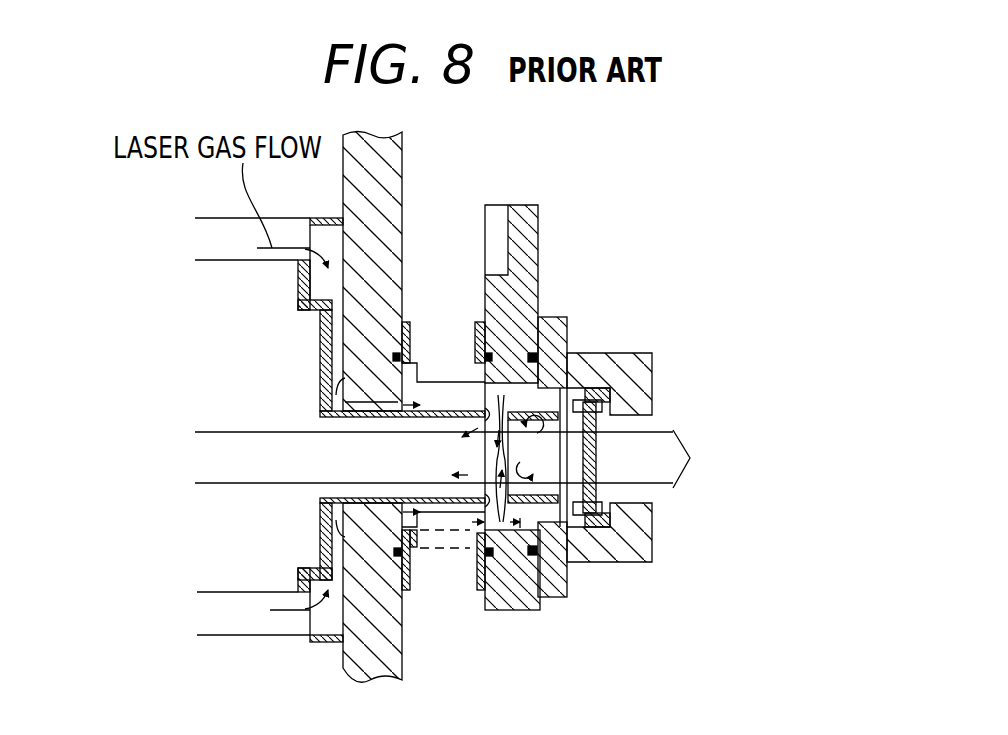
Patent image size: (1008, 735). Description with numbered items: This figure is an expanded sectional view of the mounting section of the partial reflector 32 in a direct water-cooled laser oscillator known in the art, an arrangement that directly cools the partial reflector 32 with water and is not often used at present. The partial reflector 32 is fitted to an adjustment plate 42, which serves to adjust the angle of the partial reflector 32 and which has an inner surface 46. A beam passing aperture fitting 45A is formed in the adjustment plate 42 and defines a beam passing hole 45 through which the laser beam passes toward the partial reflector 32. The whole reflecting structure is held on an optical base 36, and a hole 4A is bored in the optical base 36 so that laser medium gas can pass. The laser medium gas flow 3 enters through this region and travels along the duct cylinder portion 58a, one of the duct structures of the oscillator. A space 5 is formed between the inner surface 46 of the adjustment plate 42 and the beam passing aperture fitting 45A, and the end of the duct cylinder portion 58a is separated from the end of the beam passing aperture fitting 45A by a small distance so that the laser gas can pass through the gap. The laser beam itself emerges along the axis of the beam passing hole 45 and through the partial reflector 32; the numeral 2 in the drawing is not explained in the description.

The laser beam 2 is at (675, 490).
The laser medium gas flow 3 is at (290, 610).
The hole bored in the optical base 4A is at (340, 398).
The space 5 is at (605, 530).
The partial reflector 32 is at (600, 450).
The optical base 36 is at (403, 150).
The adjustment plate 42 is at (524, 205).
The beam passing hole 45 is at (563, 458).
The beam passing aperture fitting 45A is at (567, 363).
The inner surface 46 is at (472, 530).
The duct cylinder portion 58a is at (428, 410).